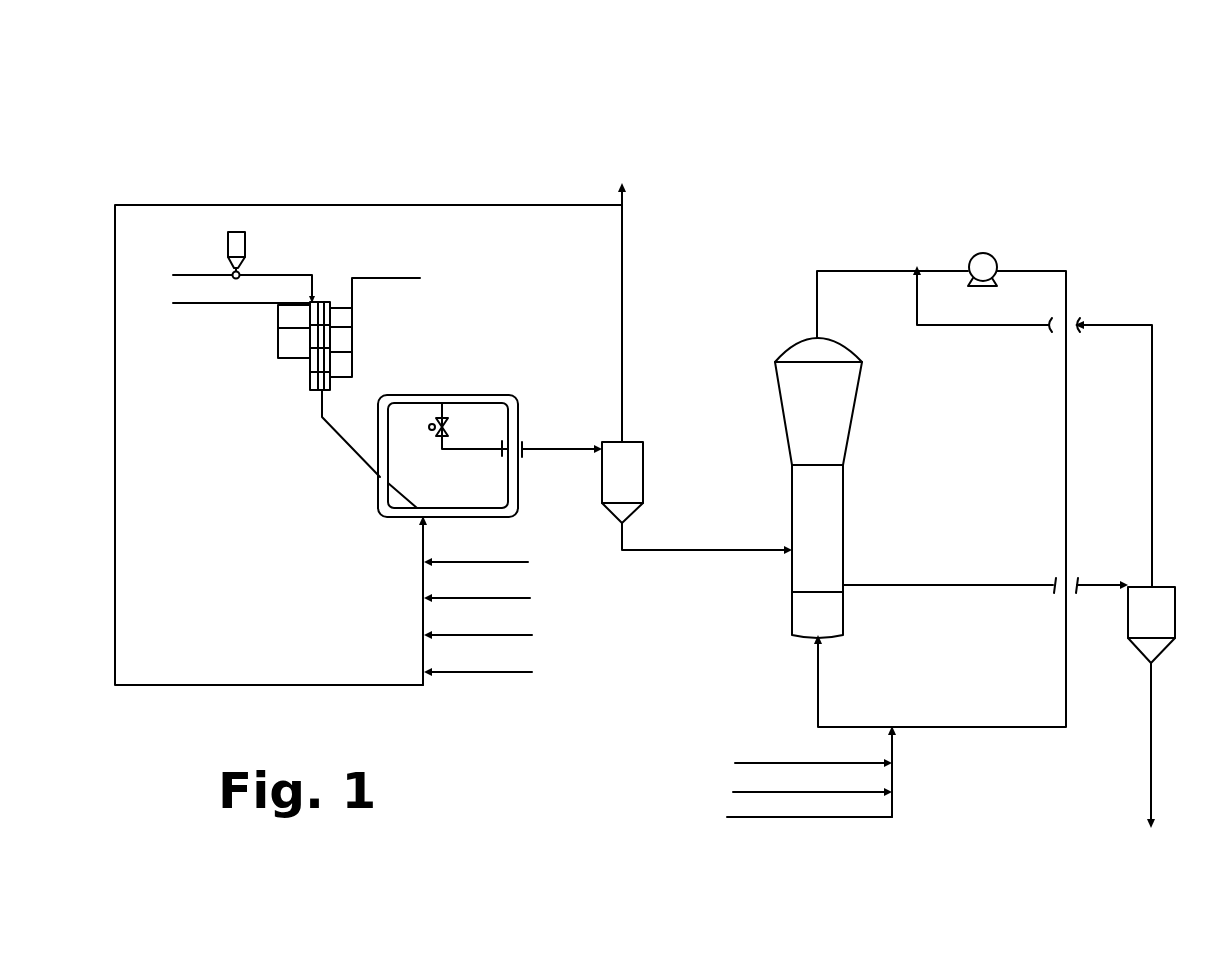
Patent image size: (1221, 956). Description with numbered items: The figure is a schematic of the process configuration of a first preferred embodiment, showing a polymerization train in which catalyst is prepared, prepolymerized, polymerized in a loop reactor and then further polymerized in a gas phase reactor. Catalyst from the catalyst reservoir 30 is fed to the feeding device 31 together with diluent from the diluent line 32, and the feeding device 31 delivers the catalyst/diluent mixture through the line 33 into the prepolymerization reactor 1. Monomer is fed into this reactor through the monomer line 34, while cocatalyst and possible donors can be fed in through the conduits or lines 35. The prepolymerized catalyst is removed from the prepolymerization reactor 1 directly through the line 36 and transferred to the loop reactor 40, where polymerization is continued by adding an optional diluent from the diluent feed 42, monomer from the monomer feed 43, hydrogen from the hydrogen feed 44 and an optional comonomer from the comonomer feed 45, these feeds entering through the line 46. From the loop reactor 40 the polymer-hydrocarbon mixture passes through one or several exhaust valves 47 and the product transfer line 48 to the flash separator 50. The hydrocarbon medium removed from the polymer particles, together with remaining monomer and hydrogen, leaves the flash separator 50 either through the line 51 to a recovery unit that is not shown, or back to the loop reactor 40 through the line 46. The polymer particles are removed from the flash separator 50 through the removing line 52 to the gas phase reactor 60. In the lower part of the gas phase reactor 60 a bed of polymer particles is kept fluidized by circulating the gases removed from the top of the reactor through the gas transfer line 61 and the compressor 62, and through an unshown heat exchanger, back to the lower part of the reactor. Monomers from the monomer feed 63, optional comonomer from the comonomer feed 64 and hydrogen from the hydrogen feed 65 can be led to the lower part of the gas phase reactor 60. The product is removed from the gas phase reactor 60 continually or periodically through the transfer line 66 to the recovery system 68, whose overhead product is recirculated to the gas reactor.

The prepolymerization reactor 1 is at (295, 387).
The catalyst reservoir 30 is at (231, 232).
The feeding device 31 is at (231, 271).
The diluent 32 is at (192, 273).
The catalyst/diluent mixture 33 is at (275, 275).
The monomer 34 is at (217, 305).
The cocatalyst and possible donors 35 is at (394, 277).
The line 36 is at (355, 455).
The loop reactor 40 is at (415, 395).
The diluent feed (optional) 42 is at (458, 560).
The monomer feed 43 is at (460, 597).
The hydrogen feed 44 is at (460, 634).
The comonomer feed (optional) 45 is at (462, 671).
The line back to the loop reactor 46 is at (420, 543).
The exhaust valve 47 is at (447, 427).
The product transfer line 48 is at (553, 447).
The flash separator 50 is at (645, 473).
The recovery unit and off gas vent 51 is at (626, 200).
The removing line 52 is at (683, 550).
The gas phase reactor 60 is at (855, 428).
The gas transfer line 61 is at (843, 268).
The compressor 62 is at (1000, 262).
The monomer feed 63 is at (823, 762).
The comonomer feed 64 is at (770, 790).
The hydrogen feed 65 is at (790, 817).
The transfer line 66 is at (897, 583).
The recovery system 68 is at (1165, 585).